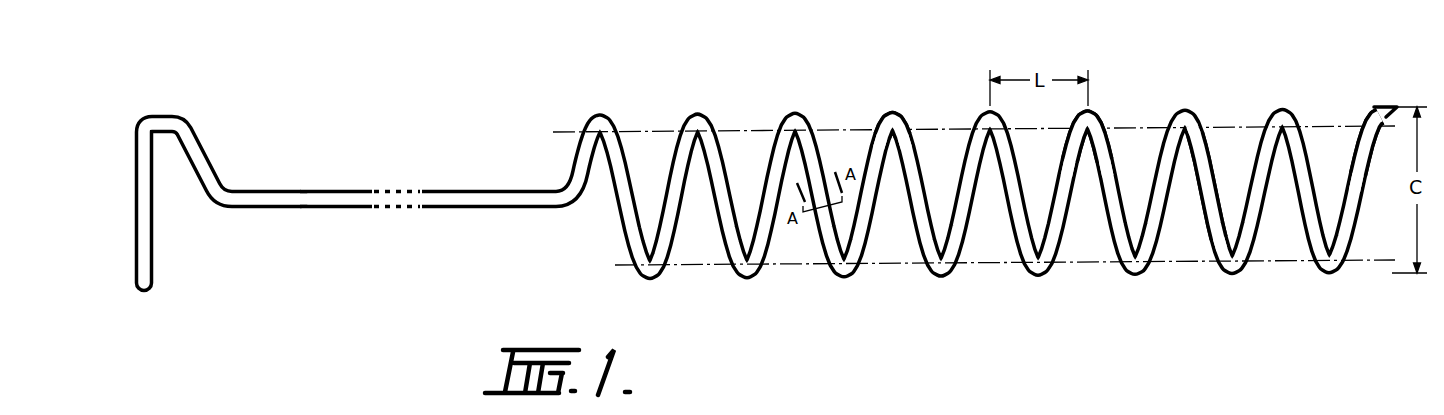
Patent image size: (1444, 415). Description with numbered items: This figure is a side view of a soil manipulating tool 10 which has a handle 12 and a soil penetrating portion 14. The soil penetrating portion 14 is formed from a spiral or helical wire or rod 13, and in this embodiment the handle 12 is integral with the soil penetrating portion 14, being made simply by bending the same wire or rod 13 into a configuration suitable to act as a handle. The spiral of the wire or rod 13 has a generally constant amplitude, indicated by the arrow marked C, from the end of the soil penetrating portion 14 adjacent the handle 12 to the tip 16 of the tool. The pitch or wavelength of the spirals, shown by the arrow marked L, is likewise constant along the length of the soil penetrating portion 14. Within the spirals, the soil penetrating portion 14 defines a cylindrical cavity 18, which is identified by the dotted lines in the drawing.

The soil manipulating tool 10 is at (770, 155).
The handle 12 is at (215, 173).
The spiral or helical wire or rod 13 is at (1212, 157).
The soil penetrating portion 14 is at (892, 110).
The tip 16 is at (1382, 107).
The cylindrical cavity 18 is at (1099, 232).